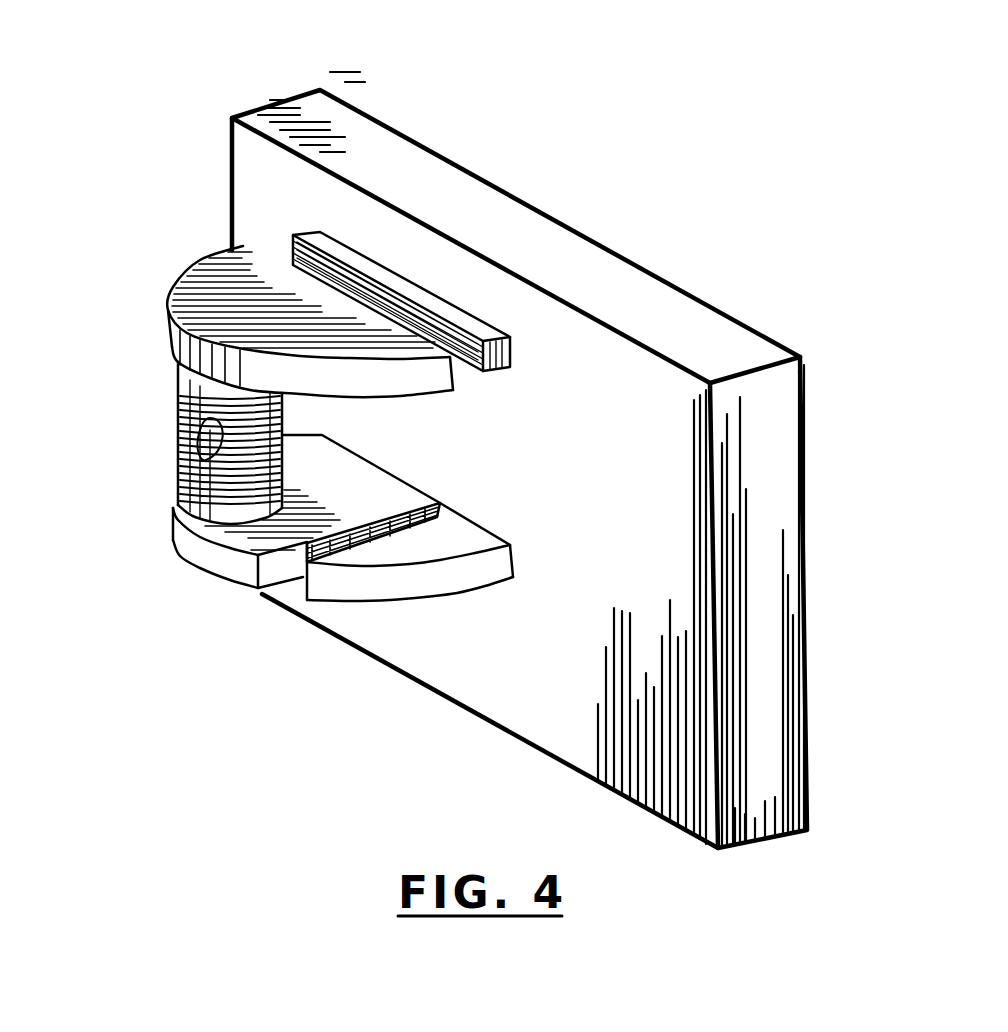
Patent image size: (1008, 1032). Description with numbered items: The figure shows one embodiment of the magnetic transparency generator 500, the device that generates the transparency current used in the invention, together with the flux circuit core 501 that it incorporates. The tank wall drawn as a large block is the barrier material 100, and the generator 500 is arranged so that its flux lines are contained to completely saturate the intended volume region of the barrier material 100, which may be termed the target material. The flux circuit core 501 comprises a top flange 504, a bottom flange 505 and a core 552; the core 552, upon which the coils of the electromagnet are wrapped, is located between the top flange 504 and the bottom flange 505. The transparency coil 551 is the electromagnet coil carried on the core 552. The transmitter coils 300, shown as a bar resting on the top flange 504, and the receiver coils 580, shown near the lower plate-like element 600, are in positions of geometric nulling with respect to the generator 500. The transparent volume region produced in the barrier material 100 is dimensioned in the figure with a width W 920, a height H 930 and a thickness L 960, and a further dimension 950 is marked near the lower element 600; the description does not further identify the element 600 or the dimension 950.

The barrier material 100 is at (320, 90).
The transmitter coils 300 is at (303, 268).
The magnetic transparency generator 500 is at (178, 383).
The flux circuit core 501 is at (167, 510).
The top flange 504 is at (231, 253).
The bottom flange 505 is at (213, 560).
The transparency coil 551 is at (177, 467).
The core 552 is at (180, 411).
The receiver coils 580 is at (425, 475).
The pole piece 600 is at (410, 519).
The width W 920 is at (410, 68).
The height H 930 is at (873, 326).
The gap G 950 is at (670, 558).
The thickness L 960 is at (310, 80).